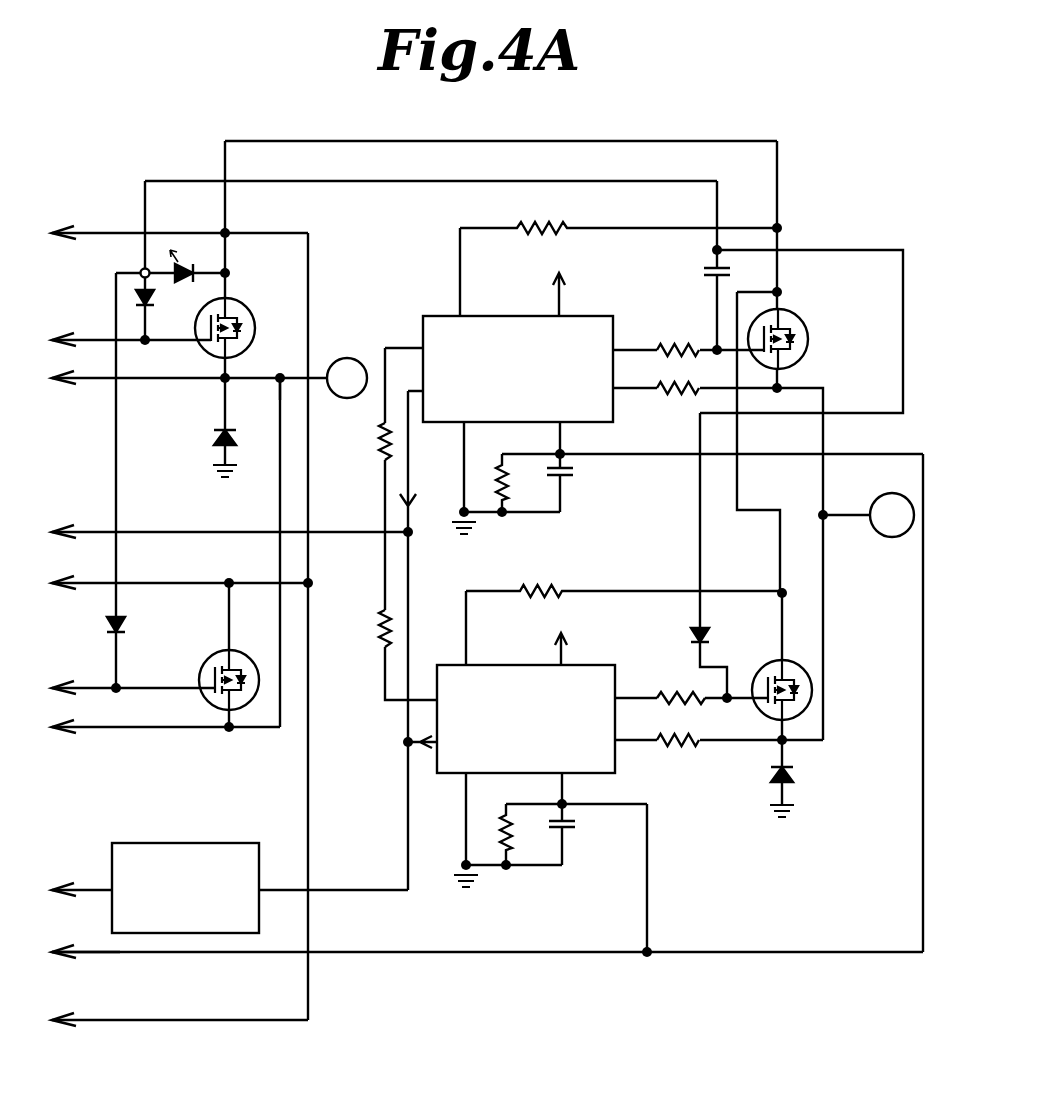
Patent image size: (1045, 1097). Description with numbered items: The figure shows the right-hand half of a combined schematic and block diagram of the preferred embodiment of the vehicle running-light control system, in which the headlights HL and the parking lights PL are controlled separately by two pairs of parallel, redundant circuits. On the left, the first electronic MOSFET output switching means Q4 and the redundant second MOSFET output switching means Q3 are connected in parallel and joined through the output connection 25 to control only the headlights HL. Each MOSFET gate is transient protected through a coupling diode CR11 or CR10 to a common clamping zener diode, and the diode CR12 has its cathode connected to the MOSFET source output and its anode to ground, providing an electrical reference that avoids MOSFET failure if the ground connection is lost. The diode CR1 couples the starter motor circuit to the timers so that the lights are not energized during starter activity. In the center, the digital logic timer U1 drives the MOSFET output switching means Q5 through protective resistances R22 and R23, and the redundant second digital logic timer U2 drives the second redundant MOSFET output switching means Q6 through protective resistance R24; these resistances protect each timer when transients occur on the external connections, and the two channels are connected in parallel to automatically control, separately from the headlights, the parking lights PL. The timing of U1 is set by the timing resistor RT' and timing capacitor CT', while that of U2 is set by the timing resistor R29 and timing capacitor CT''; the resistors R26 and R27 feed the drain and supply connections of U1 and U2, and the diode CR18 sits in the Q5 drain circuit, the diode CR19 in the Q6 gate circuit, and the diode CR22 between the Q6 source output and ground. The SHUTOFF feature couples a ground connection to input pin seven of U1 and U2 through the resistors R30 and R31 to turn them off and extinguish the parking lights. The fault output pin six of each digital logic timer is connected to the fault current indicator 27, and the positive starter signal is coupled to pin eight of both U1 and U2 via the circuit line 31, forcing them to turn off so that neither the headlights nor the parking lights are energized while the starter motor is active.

The diode CR1 is at (190, 265).
The first electronic MOSFET output switching means Q4 is at (286, 272).
The output connection 25 is at (293, 360).
The coupling diode CR11 is at (150, 305).
The diode CR12 is at (212, 440).
The headlights HL is at (346, 392).
The resistor R30 is at (382, 452).
The resistor R31 is at (382, 625).
The coupling diode CR10 is at (122, 624).
The second MOSFET output switching means Q3 is at (208, 676).
The fault current indicator 27 is at (166, 843).
The circuit line 31 is at (462, 955).
The resistor R26 is at (582, 205).
The digital logic timer U1 is at (500, 316).
The diode CR18 is at (710, 268).
The protective resistance R22 is at (700, 328).
The protective resistance R23 is at (706, 372).
The MOSFET output switching means Q5 is at (805, 332).
The parking lights PL is at (868, 532).
The timing resistor RT' is at (504, 502).
The timing capacitor CT' is at (572, 509).
The resistor R27 is at (576, 578).
The second digital logic timer U2 is at (508, 665).
The diode CR19 is at (704, 630).
The protective resistance R24 is at (690, 670).
The second redundant MOSFET output switching means Q6 is at (810, 675).
The diode CR22 is at (797, 775).
The timing capacitor CT'' is at (580, 842).
The timing resistor R29 is at (512, 860).